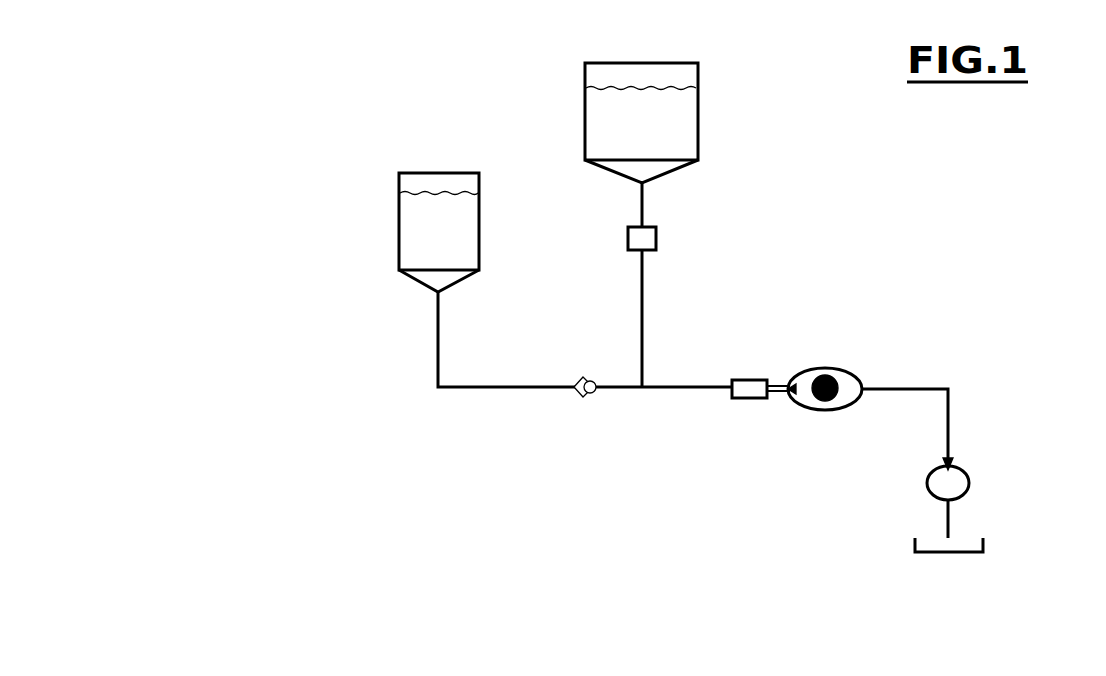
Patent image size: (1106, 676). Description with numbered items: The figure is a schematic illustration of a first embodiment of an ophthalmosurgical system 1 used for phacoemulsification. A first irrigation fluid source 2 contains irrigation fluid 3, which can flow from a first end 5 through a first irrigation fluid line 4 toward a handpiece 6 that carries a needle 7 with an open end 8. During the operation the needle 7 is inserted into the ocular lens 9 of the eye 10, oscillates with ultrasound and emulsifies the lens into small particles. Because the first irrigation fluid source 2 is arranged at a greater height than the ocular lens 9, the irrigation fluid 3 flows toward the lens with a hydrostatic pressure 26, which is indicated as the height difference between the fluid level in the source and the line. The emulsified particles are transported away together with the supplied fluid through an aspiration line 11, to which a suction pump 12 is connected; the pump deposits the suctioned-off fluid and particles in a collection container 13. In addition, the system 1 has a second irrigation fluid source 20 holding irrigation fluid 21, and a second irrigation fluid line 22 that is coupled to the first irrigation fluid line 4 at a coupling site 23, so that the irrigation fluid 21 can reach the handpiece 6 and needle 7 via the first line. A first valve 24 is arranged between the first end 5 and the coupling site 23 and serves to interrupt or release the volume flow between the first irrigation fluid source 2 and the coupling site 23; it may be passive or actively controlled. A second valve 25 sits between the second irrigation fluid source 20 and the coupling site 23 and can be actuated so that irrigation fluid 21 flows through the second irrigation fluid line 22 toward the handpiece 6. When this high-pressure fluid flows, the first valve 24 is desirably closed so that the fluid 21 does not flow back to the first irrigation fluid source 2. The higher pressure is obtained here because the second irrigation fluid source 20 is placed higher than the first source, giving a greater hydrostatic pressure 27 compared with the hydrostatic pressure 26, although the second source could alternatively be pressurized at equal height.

The ophthalmosurgical system 1 is at (972, 250).
The first irrigation fluid source 2 is at (399, 222).
The irrigation fluid 3 is at (408, 258).
The first irrigation fluid line 4 is at (470, 388).
The first end 5 is at (433, 292).
The handpiece 6 is at (742, 400).
The needle 7 is at (772, 398).
The end 8 is at (790, 408).
The ocular lens 9 is at (830, 378).
The eye 10 is at (858, 372).
The aspiration line 11 is at (952, 420).
The suction pump 12 is at (973, 482).
The collection container 13 is at (985, 543).
The second irrigation fluid source 20 is at (698, 72).
The irrigation fluid 21 is at (685, 120).
The second irrigation fluid line 22 is at (645, 202).
The coupling site 23 is at (645, 387).
The first valve 24 is at (576, 392).
The second valve 25 is at (655, 233).
The hydrostatic pressure 26 is at (436, 387).
The hydrostatic pressure 27 is at (585, 88).